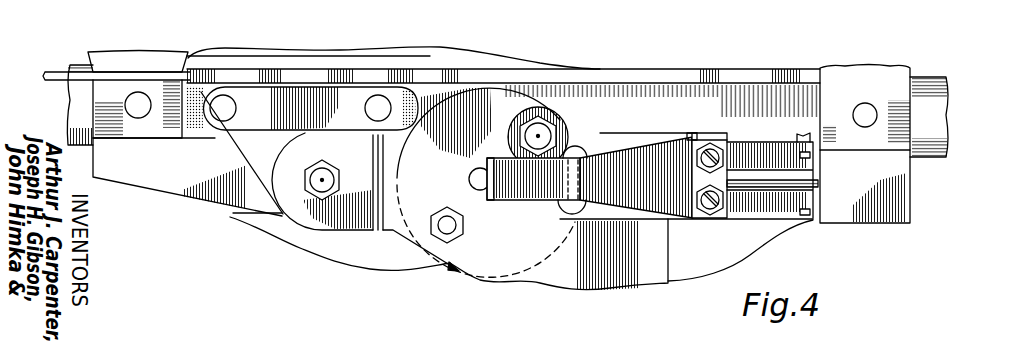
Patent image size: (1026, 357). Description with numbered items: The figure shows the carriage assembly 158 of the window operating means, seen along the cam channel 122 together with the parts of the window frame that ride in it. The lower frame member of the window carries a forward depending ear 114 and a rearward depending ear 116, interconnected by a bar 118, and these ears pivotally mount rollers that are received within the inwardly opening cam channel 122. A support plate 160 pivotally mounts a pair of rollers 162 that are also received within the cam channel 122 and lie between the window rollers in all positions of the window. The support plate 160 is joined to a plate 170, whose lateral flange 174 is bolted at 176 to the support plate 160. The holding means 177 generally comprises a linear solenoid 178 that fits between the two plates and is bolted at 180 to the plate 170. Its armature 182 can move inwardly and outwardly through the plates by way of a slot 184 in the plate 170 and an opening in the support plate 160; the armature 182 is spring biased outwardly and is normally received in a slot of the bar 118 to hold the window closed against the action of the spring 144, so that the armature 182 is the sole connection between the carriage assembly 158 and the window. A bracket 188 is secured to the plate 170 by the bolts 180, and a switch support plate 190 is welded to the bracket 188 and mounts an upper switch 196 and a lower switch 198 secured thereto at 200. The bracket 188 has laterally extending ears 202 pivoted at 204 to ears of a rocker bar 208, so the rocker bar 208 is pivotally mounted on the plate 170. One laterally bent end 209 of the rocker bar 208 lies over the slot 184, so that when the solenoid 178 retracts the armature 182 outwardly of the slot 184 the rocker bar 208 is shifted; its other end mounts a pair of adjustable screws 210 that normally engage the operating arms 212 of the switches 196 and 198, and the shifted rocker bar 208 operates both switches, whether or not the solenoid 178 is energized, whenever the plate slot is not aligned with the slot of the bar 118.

The forward depending ear 114 is at (900, 77).
The rearward depending ear 116 is at (143, 63).
The bar 118 is at (200, 210).
The cam channel 122 is at (458, 68).
The spring 144 is at (55, 70).
The carriage assembly 158 is at (676, 248).
The support plate 160 is at (312, 87).
The rollers 162 is at (236, 107).
The plate 170 is at (398, 222).
The lateral flange 174 is at (356, 210).
The bolt 176 is at (322, 180).
The holding means 177 is at (452, 273).
The linear solenoid 178 is at (503, 273).
The bolts 180 is at (538, 136).
The armature 182 is at (481, 168).
The slot 184 is at (469, 182).
The bracket 188 is at (633, 142).
The switch support plate 190 is at (755, 177).
The upper switch 196 is at (737, 147).
The lower switch 198 is at (818, 184).
The switch fasteners 200 is at (720, 147).
The laterally extending ears 202 is at (590, 157).
The pivot 204 is at (574, 150).
The rocker bar 208 is at (653, 150).
The laterally bent end 209 is at (484, 197).
The adjustable screws 210 is at (700, 160).
The operating arms 212 is at (807, 156).